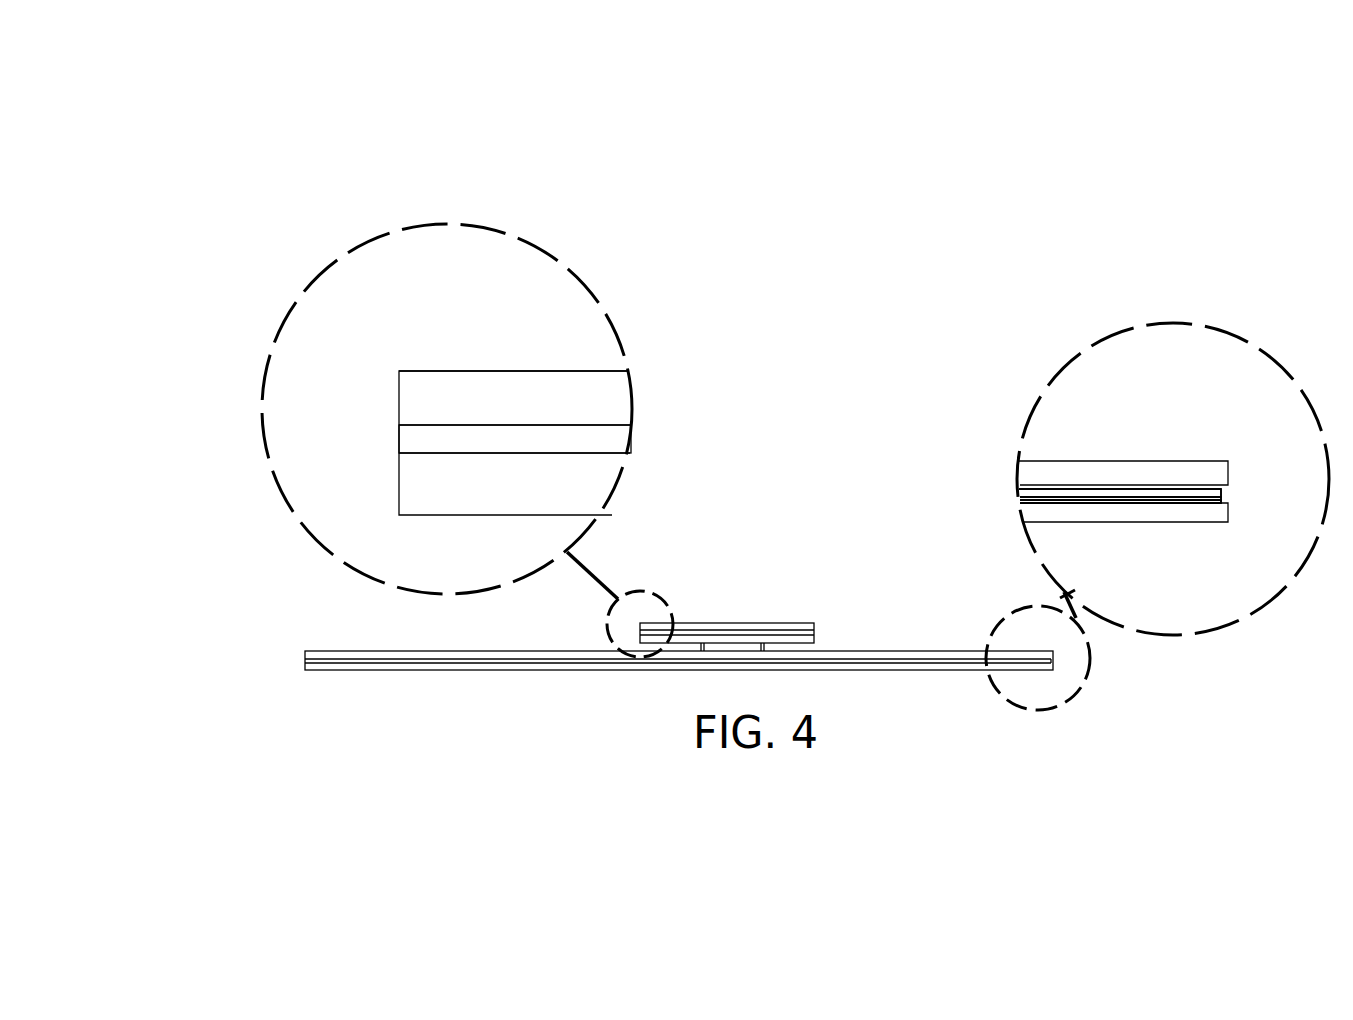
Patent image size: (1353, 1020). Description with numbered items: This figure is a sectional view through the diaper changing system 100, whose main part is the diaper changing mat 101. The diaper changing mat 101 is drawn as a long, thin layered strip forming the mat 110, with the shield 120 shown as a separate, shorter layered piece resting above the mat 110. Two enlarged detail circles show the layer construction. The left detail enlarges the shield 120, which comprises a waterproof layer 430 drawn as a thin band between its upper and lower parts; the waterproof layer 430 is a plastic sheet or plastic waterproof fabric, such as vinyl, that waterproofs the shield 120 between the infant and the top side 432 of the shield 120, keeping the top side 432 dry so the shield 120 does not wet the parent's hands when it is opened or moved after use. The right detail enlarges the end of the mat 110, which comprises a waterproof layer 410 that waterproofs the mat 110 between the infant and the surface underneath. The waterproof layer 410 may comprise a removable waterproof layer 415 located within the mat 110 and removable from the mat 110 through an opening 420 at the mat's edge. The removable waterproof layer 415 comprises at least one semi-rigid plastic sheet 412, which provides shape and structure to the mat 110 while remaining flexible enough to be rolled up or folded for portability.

The diaper changing system 100 is at (190, 168).
The diaper changing mat 101 is at (195, 228).
The mat 110 is at (314, 651).
The shield 120 is at (748, 613).
The waterproof layer 410 is at (1112, 493).
The semi-rigid plastic sheet 412 is at (1150, 495).
The removable waterproof layer 415 is at (1172, 493).
The opening 420 is at (1232, 492).
The waterproof layer 430 is at (408, 442).
The top side 432 is at (427, 372).